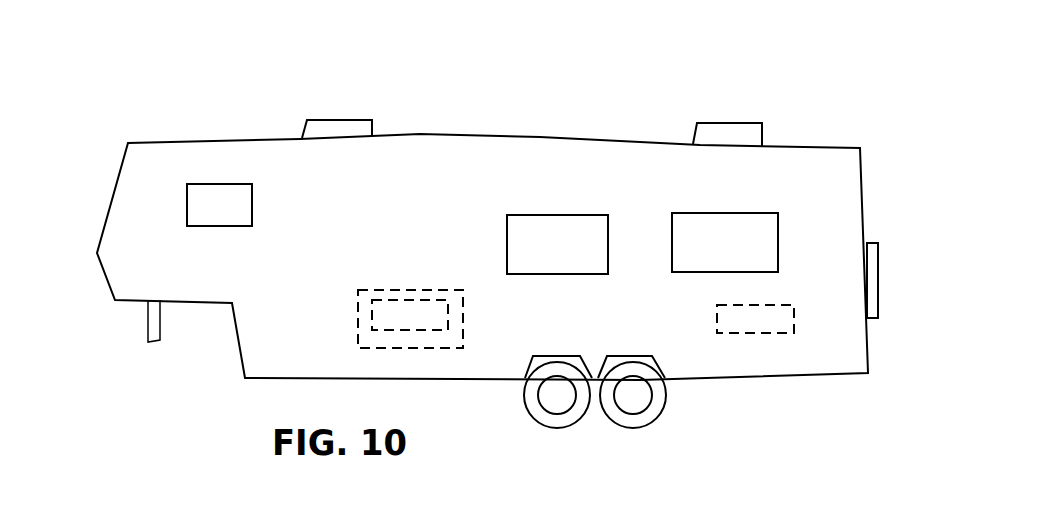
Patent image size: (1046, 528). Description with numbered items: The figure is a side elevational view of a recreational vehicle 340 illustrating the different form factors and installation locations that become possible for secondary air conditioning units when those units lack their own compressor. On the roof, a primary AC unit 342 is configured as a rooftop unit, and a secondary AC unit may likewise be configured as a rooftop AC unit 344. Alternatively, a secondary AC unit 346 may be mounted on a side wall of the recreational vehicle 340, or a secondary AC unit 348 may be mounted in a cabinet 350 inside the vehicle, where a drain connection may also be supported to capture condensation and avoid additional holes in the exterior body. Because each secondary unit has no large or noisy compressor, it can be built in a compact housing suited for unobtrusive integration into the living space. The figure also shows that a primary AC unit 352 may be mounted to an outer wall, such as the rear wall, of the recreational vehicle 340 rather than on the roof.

The recreational vehicle 340 is at (100, 180).
The primary AC unit 342 is at (332, 130).
The rooftop AC unit 344 is at (748, 138).
The secondary AC unit 346 is at (768, 298).
The secondary AC unit 348 is at (392, 293).
The cabinet 350 is at (357, 320).
The primary AC unit 352 is at (872, 240).